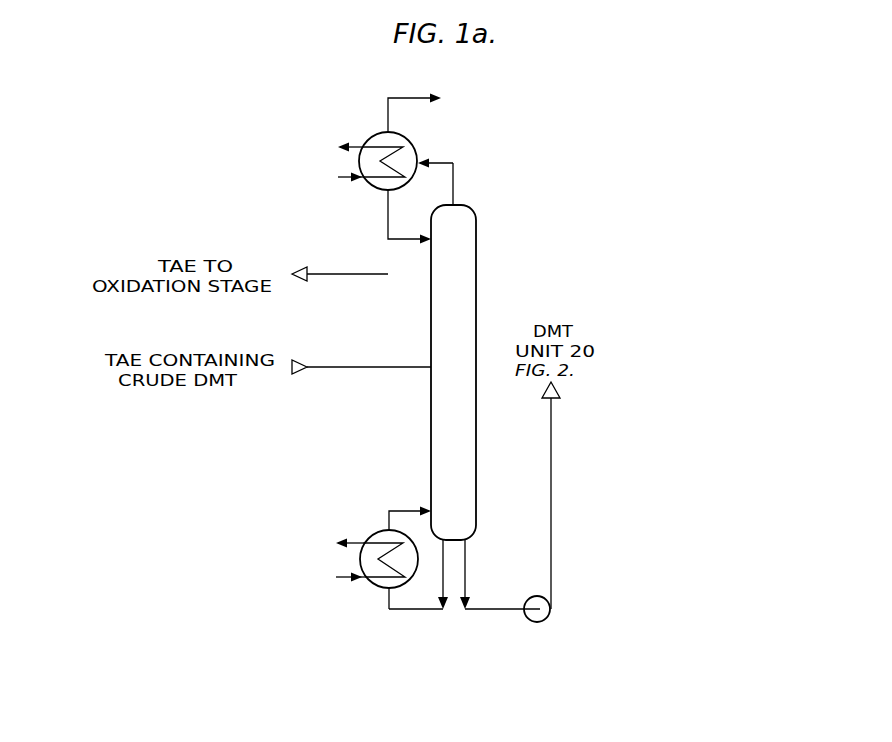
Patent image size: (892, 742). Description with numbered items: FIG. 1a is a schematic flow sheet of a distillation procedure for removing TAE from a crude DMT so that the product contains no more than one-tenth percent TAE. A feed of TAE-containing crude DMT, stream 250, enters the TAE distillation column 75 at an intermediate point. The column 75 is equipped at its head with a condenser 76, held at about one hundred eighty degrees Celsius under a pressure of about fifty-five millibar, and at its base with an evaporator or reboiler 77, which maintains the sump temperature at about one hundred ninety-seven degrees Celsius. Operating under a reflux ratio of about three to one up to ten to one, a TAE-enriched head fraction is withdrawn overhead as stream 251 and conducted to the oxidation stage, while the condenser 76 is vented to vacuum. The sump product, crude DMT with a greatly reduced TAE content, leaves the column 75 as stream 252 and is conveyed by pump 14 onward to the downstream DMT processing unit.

The TAE distillation column 75 is at (478, 258).
The condenser 76 is at (410, 141).
The evaporator or reboiler 77 is at (378, 530).
The pump 14 is at (549, 616).
The feed line of TAE containing crude DMT 250 is at (361, 352).
The TAE line to oxidation stage 251 is at (340, 260).
The stream of crude DMT sump product 252 is at (563, 495).